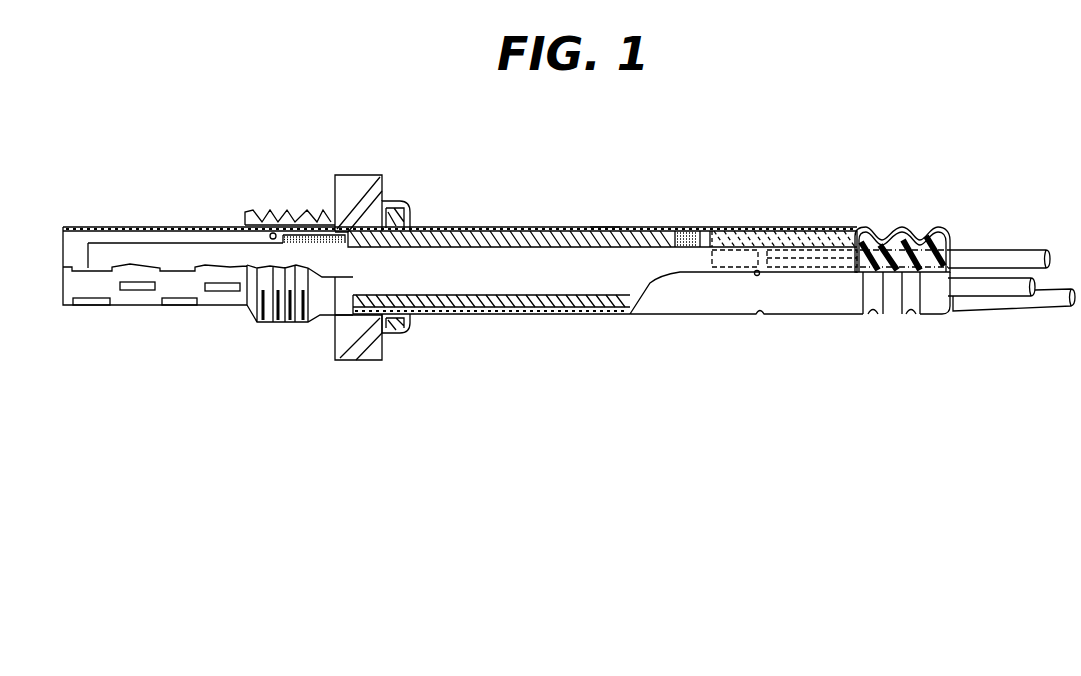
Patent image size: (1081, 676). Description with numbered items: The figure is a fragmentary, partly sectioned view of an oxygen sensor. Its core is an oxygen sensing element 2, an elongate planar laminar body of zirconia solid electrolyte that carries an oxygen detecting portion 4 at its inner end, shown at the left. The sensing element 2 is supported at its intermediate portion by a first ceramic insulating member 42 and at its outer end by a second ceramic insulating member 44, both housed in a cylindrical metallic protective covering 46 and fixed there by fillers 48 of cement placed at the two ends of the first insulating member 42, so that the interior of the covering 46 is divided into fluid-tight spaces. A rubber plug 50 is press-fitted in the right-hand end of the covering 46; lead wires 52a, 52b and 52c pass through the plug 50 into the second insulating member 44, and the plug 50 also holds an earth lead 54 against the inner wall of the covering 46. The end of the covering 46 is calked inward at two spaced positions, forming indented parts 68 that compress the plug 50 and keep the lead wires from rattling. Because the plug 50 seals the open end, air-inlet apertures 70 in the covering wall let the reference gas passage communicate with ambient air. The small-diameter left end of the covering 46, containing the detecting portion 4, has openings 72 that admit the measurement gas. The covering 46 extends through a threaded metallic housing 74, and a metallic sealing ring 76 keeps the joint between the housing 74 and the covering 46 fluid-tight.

The oxygen sensing element 2 is at (498, 302).
The oxygen detecting portion 4 is at (108, 241).
The first ceramic insulating member 42 is at (480, 235).
The second ceramic insulating member 44 is at (811, 236).
The protective covering 46 is at (606, 221).
The fillers 48 is at (284, 234).
The rubber plug 50 is at (940, 229).
The lead wire 52a is at (1008, 258).
The lead wire 52b is at (978, 288).
The lead wire 52c is at (1046, 302).
The earth lead 54 is at (893, 230).
The indented parts 68 is at (868, 320).
The air-inlet apertures 70 is at (762, 229).
The openings 72 is at (138, 229).
The metallic housing 74 is at (357, 182).
The metallic sealing ring 76 is at (392, 207).